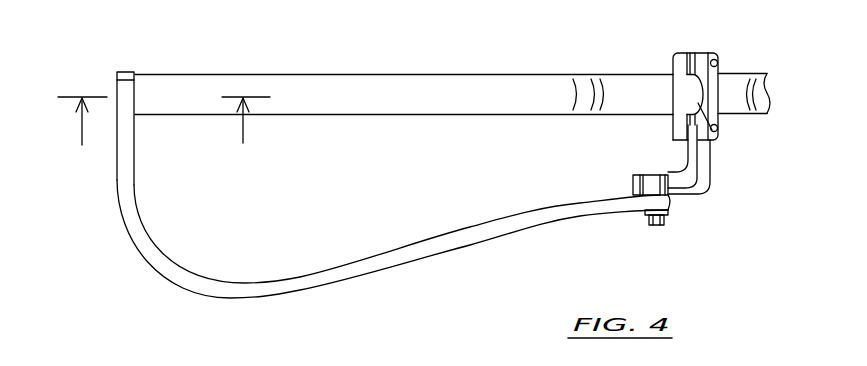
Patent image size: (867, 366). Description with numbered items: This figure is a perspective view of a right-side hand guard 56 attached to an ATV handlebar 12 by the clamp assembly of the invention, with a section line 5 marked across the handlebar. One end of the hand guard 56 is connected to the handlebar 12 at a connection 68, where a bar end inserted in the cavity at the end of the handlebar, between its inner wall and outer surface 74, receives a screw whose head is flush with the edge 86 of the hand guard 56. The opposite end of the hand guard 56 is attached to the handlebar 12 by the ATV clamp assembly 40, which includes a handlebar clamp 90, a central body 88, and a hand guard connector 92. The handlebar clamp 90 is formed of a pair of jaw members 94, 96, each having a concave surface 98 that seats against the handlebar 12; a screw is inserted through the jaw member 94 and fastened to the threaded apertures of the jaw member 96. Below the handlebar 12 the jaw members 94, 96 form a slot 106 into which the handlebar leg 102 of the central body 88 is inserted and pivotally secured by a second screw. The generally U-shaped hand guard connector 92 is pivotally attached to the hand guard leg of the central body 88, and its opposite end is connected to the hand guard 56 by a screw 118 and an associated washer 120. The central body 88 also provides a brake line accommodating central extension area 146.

The section line 5- 5 is at (164, 128).
The handlebar 12 is at (385, 73).
The ATV clamp assembly 40 is at (762, 167).
The hand guard 56 is at (187, 283).
The connection 68 is at (113, 64).
The outer surface 74 is at (135, 90).
The edge 86 is at (115, 102).
The central body 88 is at (710, 175).
The handlebar clamp 90 is at (705, 42).
The hand guard connector 92 is at (628, 181).
The jaw member 94 is at (717, 87).
The jaw member 96 is at (677, 55).
The concave surface 98 is at (703, 108).
The handlebar leg 102 is at (686, 153).
The slot 106 is at (716, 133).
The screw 118 is at (658, 227).
The washer 120 is at (643, 227).
The central extension area 146 is at (630, 142).